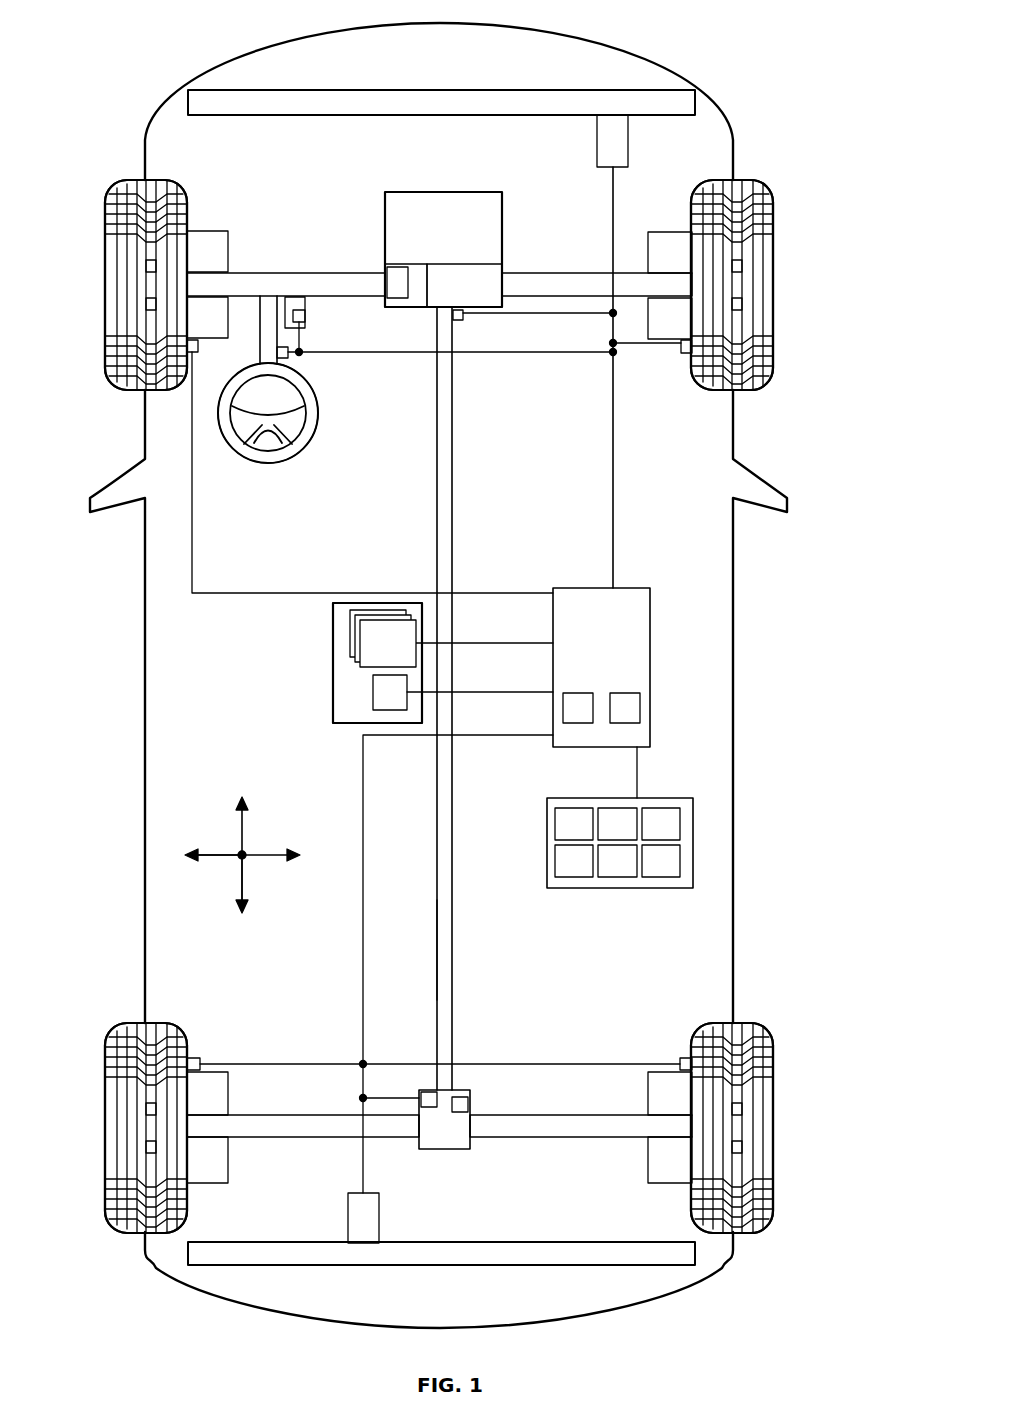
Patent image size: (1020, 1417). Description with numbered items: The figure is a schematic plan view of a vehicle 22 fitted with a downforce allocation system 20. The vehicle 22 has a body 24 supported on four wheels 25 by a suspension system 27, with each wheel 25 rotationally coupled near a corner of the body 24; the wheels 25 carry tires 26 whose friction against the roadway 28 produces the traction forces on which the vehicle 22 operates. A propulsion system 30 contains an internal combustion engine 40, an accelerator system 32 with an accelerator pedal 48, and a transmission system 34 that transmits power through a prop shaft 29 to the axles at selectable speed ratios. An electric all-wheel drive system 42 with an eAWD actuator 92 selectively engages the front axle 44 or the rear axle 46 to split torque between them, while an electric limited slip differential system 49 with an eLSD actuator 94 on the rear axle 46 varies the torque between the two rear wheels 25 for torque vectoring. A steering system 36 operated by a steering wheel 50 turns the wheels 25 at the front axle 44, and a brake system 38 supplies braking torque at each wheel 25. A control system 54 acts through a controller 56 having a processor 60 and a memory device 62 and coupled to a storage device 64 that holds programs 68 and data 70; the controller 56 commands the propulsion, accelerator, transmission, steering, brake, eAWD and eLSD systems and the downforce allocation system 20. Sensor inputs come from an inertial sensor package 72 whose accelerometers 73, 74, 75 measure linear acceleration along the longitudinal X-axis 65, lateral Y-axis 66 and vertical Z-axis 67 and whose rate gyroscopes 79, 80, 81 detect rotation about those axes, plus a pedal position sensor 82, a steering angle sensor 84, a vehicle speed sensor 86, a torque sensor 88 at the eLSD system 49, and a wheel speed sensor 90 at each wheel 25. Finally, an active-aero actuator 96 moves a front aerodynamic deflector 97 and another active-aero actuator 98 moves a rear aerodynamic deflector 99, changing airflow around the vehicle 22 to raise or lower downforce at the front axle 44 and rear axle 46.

The downforce allocation system 20 is at (290, 676).
The vehicle 22 is at (697, 49).
The body 24 is at (145, 757).
The wheels 25 is at (105, 285).
The tires 26 is at (118, 181).
The suspension system 27 is at (198, 263).
The roadway 28 is at (804, 221).
The prop shaft 29 is at (437, 820).
The propulsion system 30 is at (413, 227).
The accelerator system 32 is at (415, 401).
The transmission system 34 is at (468, 297).
The steering system 36 is at (329, 393).
The brake system 38 is at (198, 329).
The internal combustion engine 40 is at (385, 218).
The electric all-wheel drive (eAWD) system 42 is at (420, 265).
The front axle 44 is at (280, 273).
The rear axle 46 is at (518, 1127).
The accelerator pedal 48 is at (305, 303).
The electric limited slip differential (eLSD) system 49 is at (431, 1111).
The steering wheel 50 is at (304, 450).
The control system 54 is at (511, 945).
The controller 56 is at (591, 621).
The processor 60 is at (578, 693).
The memory device 62 is at (625, 693).
The storage device 64 is at (357, 682).
The X-axis 65 is at (247, 820).
The Y-axis 66 is at (230, 855).
The Z-axis 67 is at (253, 862).
The programs 68 is at (378, 656).
The data 70 is at (380, 703).
The inertial sensor package 72 is at (625, 861).
The accelerometer 73 is at (564, 836).
The accelerometer 74 is at (607, 836).
The accelerometer 75 is at (651, 836).
The rate gyroscope 79 is at (564, 873).
The rate gyroscope 80 is at (607, 873).
The rate gyroscope 81 is at (651, 873).
The pedal position sensor 82 is at (305, 320).
The steering angle sensor 84 is at (289, 355).
The vehicle speed sensor 86 is at (463, 318).
The torque sensor 88 is at (424, 1092).
The wheel speed sensor 90 is at (195, 355).
The eAWD actuator 92 is at (397, 266).
The eLSD actuator 94 is at (458, 1097).
The active-aero actuator 96 is at (630, 158).
The front aerodynamic deflector 97 is at (698, 102).
The active-aero actuator 98 is at (348, 1213).
The rear aerodynamic deflector 99 is at (538, 1242).